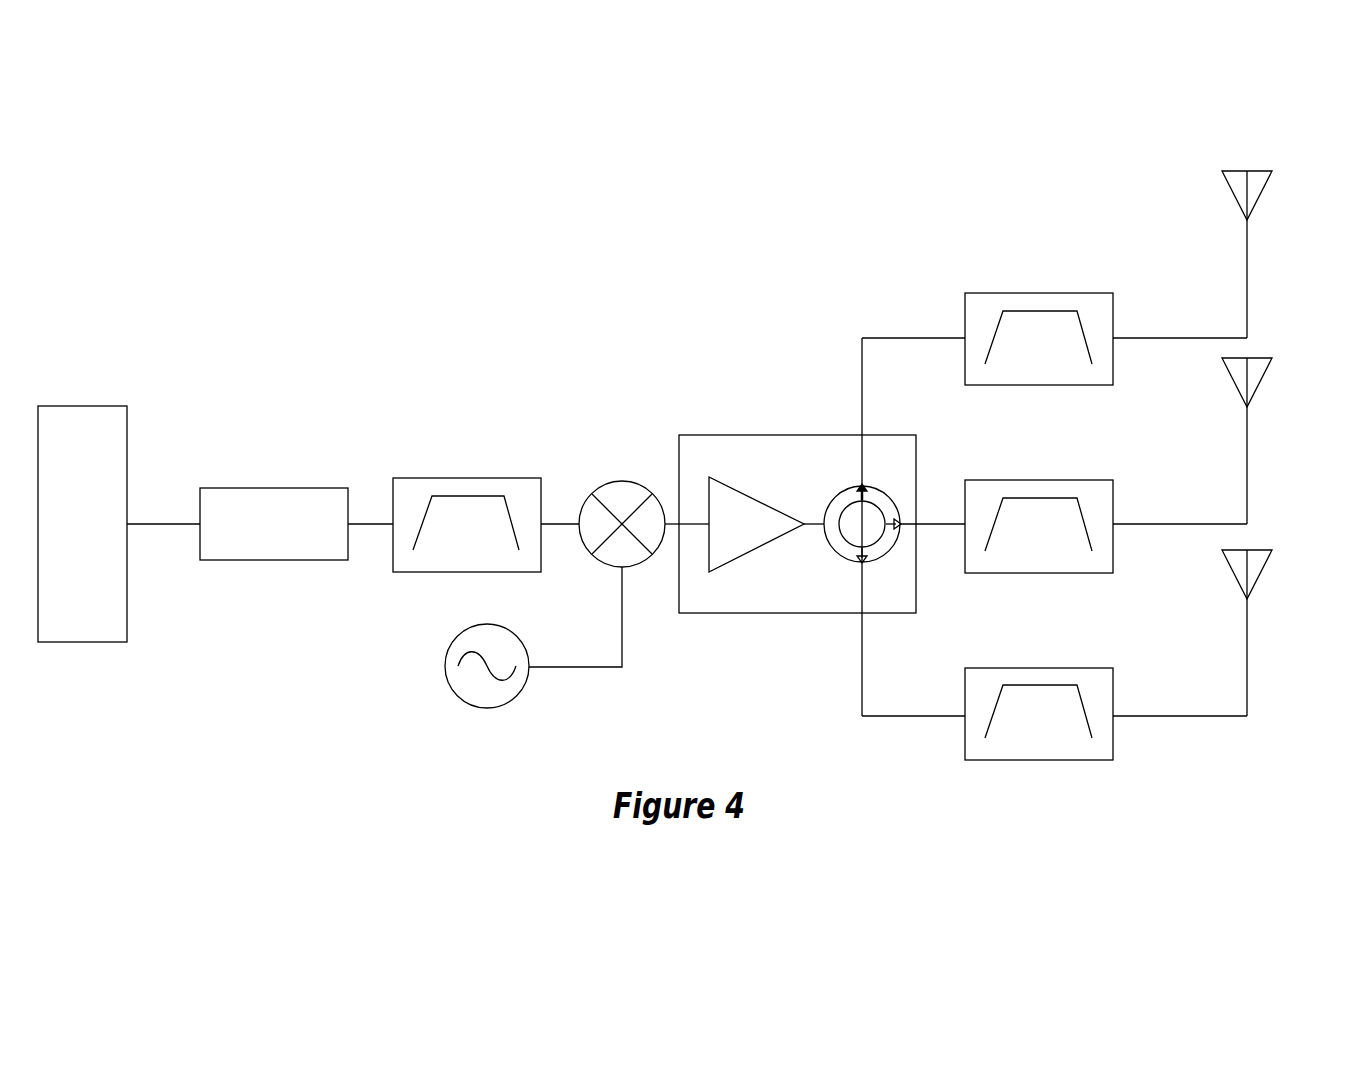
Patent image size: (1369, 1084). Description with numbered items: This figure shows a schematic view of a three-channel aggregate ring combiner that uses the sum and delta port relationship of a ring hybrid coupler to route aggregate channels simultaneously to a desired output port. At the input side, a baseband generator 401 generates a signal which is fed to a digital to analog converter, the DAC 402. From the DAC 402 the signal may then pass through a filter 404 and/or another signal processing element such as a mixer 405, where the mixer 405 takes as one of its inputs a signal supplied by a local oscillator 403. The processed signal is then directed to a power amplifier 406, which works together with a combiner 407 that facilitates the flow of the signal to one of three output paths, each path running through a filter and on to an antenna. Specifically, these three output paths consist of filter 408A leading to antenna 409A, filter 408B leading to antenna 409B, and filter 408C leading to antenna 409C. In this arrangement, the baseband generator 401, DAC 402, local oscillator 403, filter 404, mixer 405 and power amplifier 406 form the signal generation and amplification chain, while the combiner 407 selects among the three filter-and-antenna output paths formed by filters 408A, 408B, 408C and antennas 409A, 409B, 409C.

The baseband generator 401 is at (75, 405).
The digital-to-analog converter (DAC) 402 is at (288, 487).
The local oscillator 403 is at (484, 708).
The filter 404 is at (461, 477).
The mixer 405 is at (624, 480).
The power amplifier block 406 is at (770, 434).
The circulator 407 is at (850, 548).
The band filter 408A is at (1113, 305).
The band filter 408B is at (1113, 496).
The band filter 408C is at (1113, 690).
The antenna 409A is at (1260, 198).
The antenna 409B is at (1260, 385).
The antenna 409C is at (1260, 577).